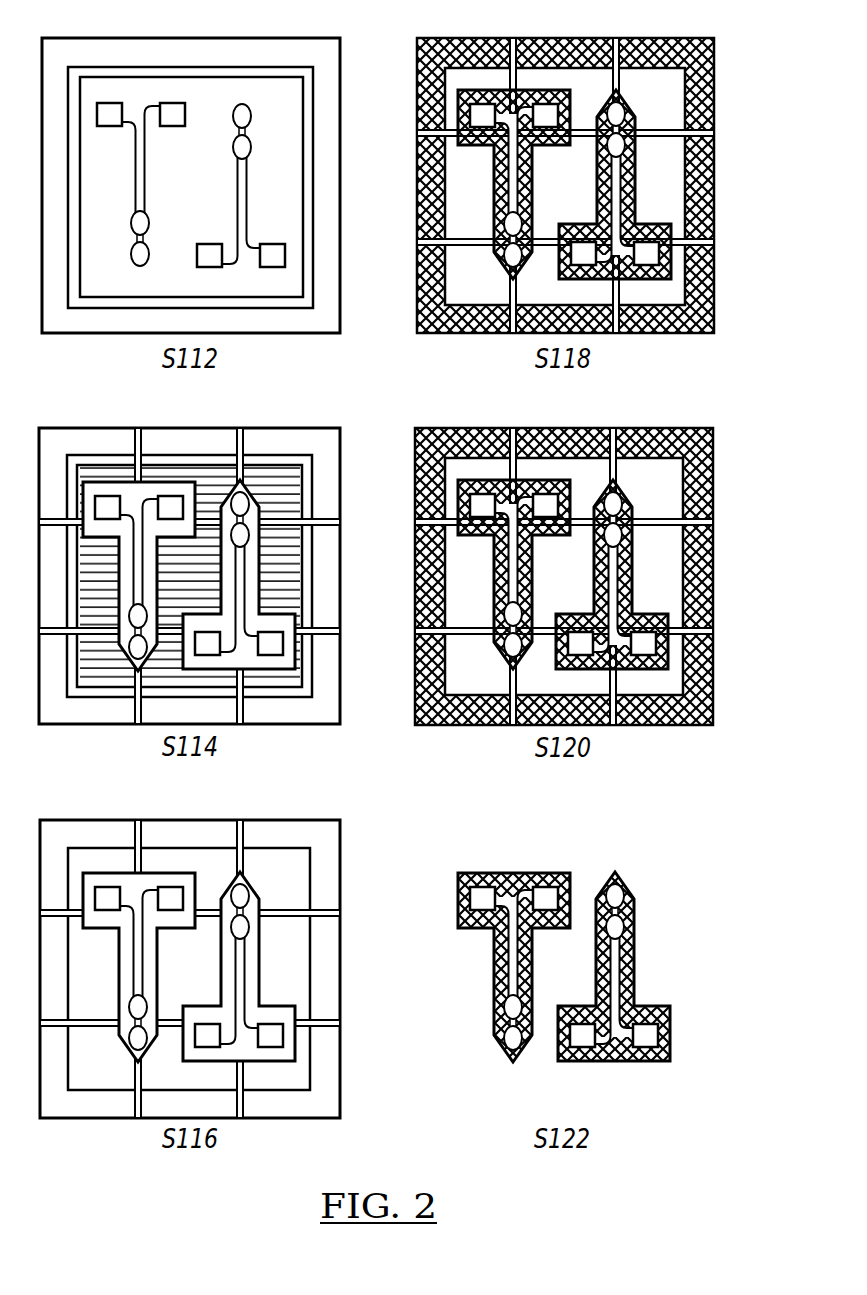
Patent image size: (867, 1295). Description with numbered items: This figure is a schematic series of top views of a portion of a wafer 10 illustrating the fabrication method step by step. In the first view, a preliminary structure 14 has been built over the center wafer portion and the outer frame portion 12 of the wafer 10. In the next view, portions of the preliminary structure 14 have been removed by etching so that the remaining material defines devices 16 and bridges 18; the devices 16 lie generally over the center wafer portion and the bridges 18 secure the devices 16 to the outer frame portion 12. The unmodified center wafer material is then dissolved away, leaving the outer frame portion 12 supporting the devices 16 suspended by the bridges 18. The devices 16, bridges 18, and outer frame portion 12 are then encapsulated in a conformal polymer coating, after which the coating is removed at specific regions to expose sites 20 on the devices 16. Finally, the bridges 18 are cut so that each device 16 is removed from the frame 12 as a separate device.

The wafer 10 is at (288, 557).
The outer frame portion 12 is at (313, 471).
The preliminary structure 14 is at (341, 61).
The device 16 is at (290, 662).
The bridge 18 is at (304, 517).
The site 20 is at (650, 650).